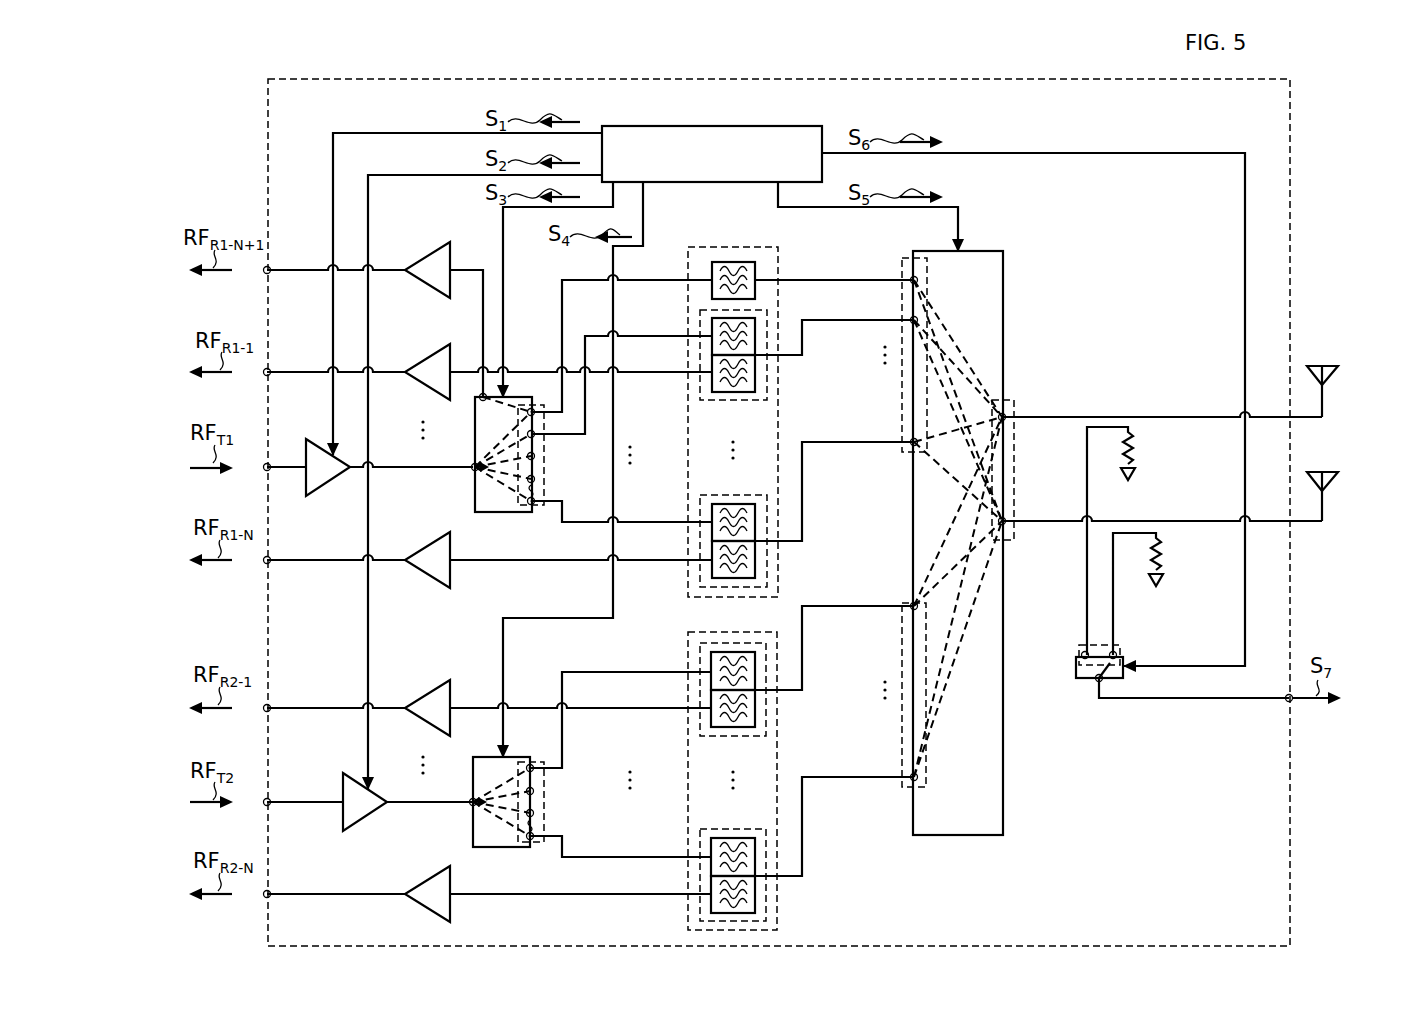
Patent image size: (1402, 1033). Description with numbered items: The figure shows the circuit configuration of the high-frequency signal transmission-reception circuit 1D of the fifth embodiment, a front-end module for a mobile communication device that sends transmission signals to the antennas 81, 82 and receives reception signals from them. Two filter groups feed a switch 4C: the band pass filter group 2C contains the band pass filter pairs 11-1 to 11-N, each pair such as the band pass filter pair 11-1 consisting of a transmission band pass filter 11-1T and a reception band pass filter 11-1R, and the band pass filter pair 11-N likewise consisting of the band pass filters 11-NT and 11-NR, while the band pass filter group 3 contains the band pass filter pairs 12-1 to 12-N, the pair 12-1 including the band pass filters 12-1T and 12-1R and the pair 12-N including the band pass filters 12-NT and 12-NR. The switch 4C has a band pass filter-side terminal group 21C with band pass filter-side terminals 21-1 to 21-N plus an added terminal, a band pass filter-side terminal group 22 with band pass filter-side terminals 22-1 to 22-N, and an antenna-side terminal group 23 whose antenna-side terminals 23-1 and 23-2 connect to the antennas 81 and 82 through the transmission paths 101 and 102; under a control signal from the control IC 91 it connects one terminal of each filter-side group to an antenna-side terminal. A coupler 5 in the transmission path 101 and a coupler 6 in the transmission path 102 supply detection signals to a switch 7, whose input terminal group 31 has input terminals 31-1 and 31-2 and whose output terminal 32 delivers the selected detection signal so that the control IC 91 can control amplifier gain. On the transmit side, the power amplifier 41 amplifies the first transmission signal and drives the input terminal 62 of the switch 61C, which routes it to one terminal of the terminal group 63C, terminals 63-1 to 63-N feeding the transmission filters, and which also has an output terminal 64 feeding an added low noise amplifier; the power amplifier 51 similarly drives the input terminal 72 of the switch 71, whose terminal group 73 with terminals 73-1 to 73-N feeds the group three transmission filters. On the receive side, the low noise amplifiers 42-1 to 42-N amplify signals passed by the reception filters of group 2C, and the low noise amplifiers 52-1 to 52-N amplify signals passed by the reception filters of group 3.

The high-frequency signal transmission-reception circuit 1D is at (1290, 95).
The control integrated circuit 91 is at (750, 126).
The band pass filter group 2C is at (750, 232).
The band pass filter group 3 is at (724, 610).
The switch 4C is at (1005, 262).
The band pass filter-side terminal group 21C is at (905, 440).
The band pass filter-side terminal 21-1 is at (908, 320).
The band pass filter-side terminal 21-N is at (908, 443).
The band pass filter-side terminal group 22 is at (903, 745).
The band pass filter-side terminal 22-1 is at (908, 603).
The band pass filter-side terminal 22-N is at (908, 778).
The antenna-side terminal group 23 is at (1016, 455).
The antenna-side terminal 23-1 is at (1006, 415).
The antenna-side terminal 23-2 is at (1004, 522).
The transmission path 101 is at (1158, 415).
The transmission path 102 is at (1163, 521).
The antenna 81 is at (1322, 364).
The antenna 82 is at (1322, 472).
The coupler 5 is at (1105, 444).
The coupler 6 is at (1131, 550).
The switch 7 is at (1133, 686).
The input terminal group 31 is at (1114, 671).
The input terminal 31-1 is at (1088, 654).
The input terminal 31-2 is at (1117, 656).
The output terminal 32 is at (1100, 684).
The power amplifier 41 is at (317, 444).
The low noise amplifier 42-1 is at (424, 356).
The low noise amplifier 42-N is at (424, 543).
The power amplifier 51 is at (354, 782).
The low noise amplifier 52-1 is at (424, 691).
The low noise amplifier 52-N is at (424, 876).
The switch 61C is at (573, 403).
The input terminal 62 is at (474, 471).
The terminal group 63C is at (546, 463).
The terminal 63-1 is at (535, 434).
The terminal 63-N is at (535, 504).
The output terminal 64 is at (478, 400).
The switch 71 is at (583, 781).
The input terminal 72 is at (473, 798).
The terminal group 73 is at (548, 799).
The terminal 73-1 is at (532, 766).
The terminal 73-N is at (535, 840).
The band pass filter 11-1T is at (757, 336).
The band pass filter 11-1R is at (757, 372).
The band pass filter pair 11-1 is at (787, 347).
The band pass filter 11-NT is at (757, 522).
The band pass filter 11-NR is at (757, 560).
The band pass filter pair 11-N is at (785, 547).
The band pass filter 12-1T is at (758, 668).
The band pass filter 12-1R is at (756, 709).
The band pass filter pair 12-1 is at (788, 675).
The band pass filter 12-NT is at (756, 857).
The band pass filter 12-NR is at (756, 893).
The band pass filter pair 12-N is at (787, 881).